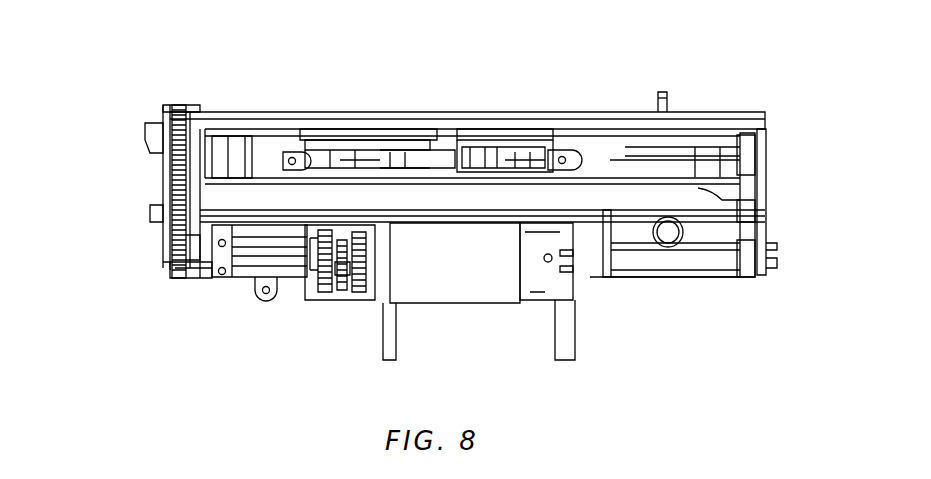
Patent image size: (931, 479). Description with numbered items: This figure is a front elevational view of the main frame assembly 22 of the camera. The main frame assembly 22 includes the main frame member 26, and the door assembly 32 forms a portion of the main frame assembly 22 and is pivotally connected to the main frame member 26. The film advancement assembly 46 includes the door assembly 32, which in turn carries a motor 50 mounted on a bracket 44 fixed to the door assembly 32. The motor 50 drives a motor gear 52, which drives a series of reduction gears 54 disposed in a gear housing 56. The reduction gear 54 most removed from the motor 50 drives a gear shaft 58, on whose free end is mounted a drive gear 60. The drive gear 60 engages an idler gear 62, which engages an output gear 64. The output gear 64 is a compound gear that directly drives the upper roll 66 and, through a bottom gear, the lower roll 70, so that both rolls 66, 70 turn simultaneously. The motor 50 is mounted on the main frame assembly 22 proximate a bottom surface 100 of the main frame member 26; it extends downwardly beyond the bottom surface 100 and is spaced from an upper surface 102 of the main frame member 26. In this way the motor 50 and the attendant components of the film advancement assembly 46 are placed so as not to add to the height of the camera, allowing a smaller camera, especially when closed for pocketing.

The main frame assembly 22 is at (140, 66).
The main frame member 26 is at (738, 110).
The door assembly 32 is at (676, 308).
The bracket 44 is at (547, 285).
The film advancement assembly 46 is at (125, 232).
The motor 50 is at (463, 270).
The motor gear 52 is at (356, 300).
The reduction gears 54 is at (343, 288).
The gear housing 56 is at (388, 290).
The gear shaft 58 is at (250, 258).
The drive gear 60 is at (170, 272).
The idler gear 62 is at (155, 210).
The output gear 64 is at (160, 153).
The upper roll 66 is at (597, 158).
The lower roll 70 is at (665, 190).
The bottom surface 100 is at (627, 283).
The upper surface 102 is at (322, 110).